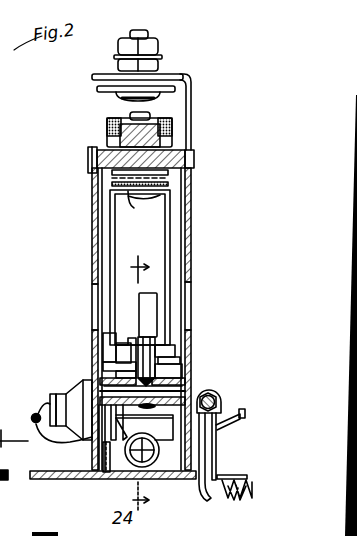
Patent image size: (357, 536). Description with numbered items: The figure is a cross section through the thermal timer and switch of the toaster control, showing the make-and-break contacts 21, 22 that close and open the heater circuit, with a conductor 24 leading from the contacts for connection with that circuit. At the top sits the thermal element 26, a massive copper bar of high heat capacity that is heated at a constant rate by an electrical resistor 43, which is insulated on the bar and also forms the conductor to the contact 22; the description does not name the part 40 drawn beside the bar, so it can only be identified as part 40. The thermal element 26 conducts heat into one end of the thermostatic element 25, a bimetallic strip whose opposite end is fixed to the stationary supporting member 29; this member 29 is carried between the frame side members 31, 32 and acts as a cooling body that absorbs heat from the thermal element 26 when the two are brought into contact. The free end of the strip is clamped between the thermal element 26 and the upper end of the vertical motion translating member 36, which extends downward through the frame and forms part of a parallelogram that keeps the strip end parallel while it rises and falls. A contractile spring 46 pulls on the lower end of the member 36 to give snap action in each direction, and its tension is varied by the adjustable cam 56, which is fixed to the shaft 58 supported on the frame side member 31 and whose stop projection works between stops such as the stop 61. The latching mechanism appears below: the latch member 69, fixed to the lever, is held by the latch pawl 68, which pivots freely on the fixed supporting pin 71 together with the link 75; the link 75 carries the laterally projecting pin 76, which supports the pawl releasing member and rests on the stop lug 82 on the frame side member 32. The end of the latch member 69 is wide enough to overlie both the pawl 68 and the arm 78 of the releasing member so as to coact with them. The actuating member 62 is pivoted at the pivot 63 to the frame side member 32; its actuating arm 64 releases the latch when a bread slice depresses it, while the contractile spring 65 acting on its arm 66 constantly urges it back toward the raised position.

The make-and-break contact 21 is at (130, 100).
The make-and-break contact 22 is at (130, 116).
The conductor 24 is at (132, 269).
The thermostatic element 25 is at (144, 212).
The thermal element 26 is at (158, 137).
The stationary supporting member 29 is at (88, 161).
The frame side member 31 is at (92, 204).
The frame side member 32 is at (192, 193).
The vertical motion translating member 36 is at (112, 247).
The cap nut 40 is at (108, 128).
The electrical resistor 43 is at (166, 122).
The contractile spring 46 is at (156, 461).
The adjustable cam 56 is at (82, 436).
The shaft 58 is at (46, 404).
The stop 61 is at (108, 347).
The actuating member 62 is at (96, 481).
The pivot 63 is at (223, 400).
The actuating arm 64 is at (108, 474).
The contractile spring 65 is at (247, 500).
The arm 66 is at (216, 459).
The latch pawl 68 is at (158, 346).
The latch member 69 is at (152, 318).
The fixed supporting pin 71 is at (185, 384).
The link 75 is at (104, 367).
The laterally projecting pin 76 is at (172, 352).
The arm 78 is at (93, 332).
The stop lug 82 is at (178, 368).